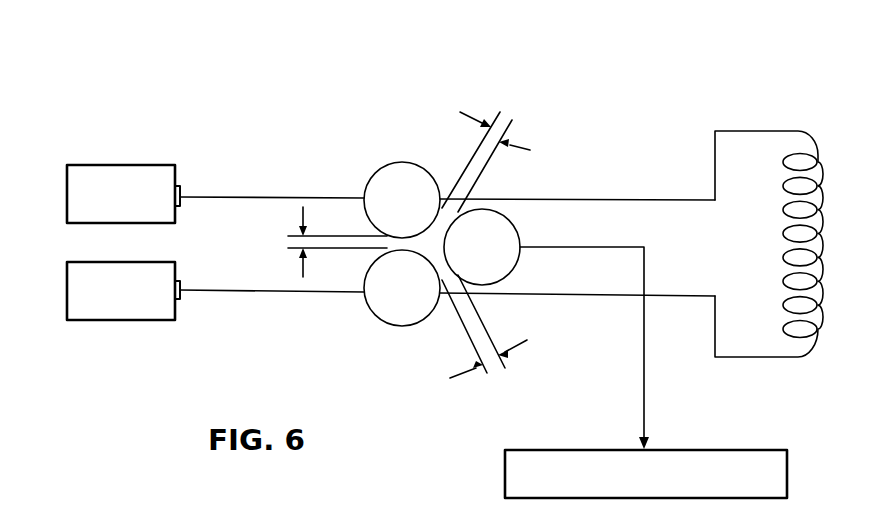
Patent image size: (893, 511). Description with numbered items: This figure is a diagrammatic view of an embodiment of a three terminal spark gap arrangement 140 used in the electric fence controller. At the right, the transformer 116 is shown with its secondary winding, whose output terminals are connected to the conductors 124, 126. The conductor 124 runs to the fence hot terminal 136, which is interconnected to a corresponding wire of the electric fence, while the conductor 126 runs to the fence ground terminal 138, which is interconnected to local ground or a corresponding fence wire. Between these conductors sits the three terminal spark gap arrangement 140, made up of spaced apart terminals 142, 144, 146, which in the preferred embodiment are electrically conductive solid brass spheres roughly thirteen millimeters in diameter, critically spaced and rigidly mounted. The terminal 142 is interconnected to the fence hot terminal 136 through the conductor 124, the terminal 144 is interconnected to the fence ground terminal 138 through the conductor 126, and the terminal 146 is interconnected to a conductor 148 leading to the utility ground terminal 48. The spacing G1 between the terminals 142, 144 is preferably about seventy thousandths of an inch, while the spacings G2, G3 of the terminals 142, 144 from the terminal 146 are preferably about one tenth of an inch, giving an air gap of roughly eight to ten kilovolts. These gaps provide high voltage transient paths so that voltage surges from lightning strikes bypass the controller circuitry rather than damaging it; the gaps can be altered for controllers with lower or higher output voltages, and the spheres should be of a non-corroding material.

The fence hot terminal 136 is at (140, 165).
The fence ground terminal 138 is at (140, 322).
The conductor 124 is at (238, 196).
The conductor 126 is at (238, 293).
The transformer 116 is at (758, 124).
The three terminal spark gap arrangement 140 is at (426, 151).
The terminal 142 is at (387, 162).
The terminal 144 is at (380, 322).
The terminal 146 is at (519, 229).
The conductor 148 is at (644, 372).
The utility ground terminal 48 is at (505, 468).
The spacing G1 is at (302, 266).
The spacing G2 is at (518, 149).
The spacing G3 is at (459, 375).